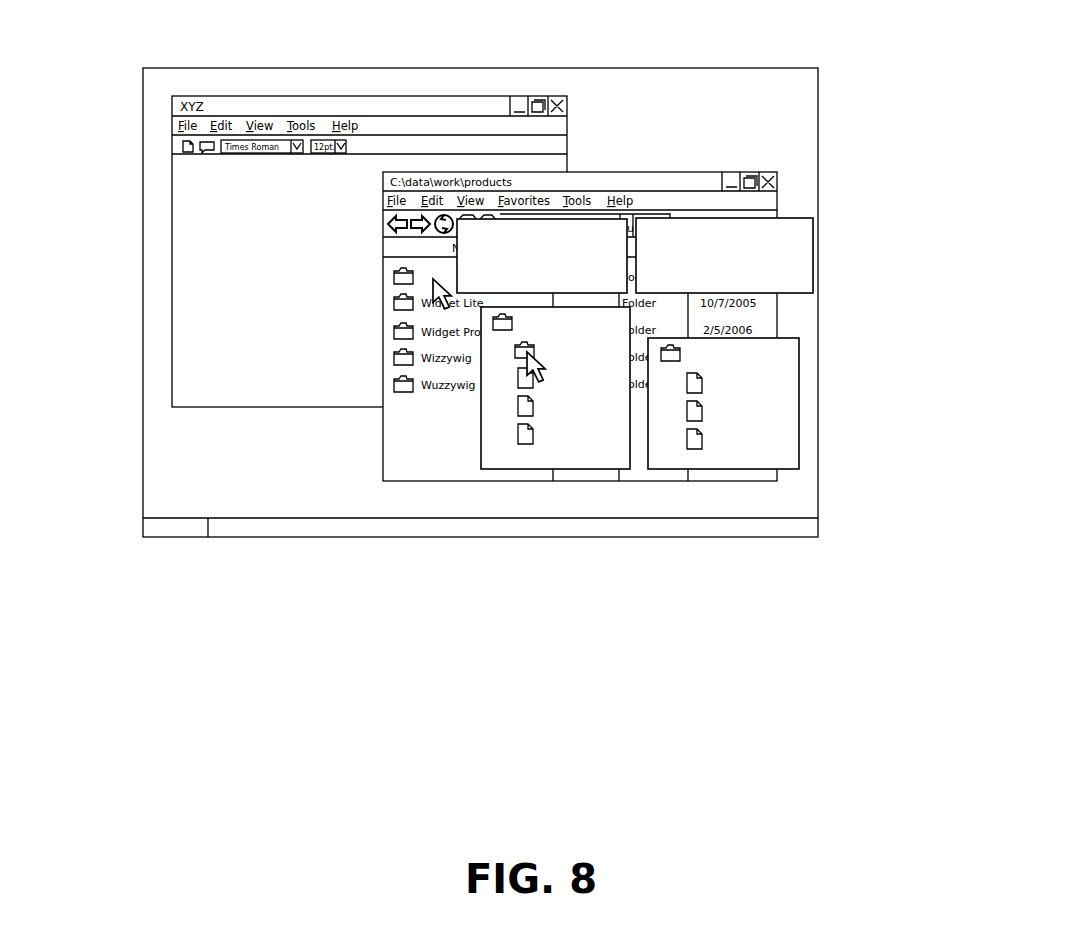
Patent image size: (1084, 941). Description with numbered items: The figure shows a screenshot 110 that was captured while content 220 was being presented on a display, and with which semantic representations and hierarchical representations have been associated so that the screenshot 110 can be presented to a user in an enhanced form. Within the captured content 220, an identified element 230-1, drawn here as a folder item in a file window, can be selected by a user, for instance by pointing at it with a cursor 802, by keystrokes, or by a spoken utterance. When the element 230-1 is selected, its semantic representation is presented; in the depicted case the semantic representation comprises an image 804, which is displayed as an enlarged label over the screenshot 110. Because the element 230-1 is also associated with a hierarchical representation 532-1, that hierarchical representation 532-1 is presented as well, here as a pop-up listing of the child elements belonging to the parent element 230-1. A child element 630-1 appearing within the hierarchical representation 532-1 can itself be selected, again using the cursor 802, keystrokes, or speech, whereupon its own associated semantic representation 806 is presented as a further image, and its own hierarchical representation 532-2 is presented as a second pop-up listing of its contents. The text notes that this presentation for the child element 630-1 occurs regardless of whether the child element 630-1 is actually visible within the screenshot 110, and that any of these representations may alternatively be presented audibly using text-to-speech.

The screenshot 110 is at (143, 85).
The content 220 is at (763, 125).
The parent element 230-1 is at (393, 277).
The cursor 802 is at (527, 357).
The image 804 is at (610, 220).
The semantic representation 806 is at (815, 257).
The hierarchical representation 532-1 is at (472, 454).
The hierarchical representation 532-2 is at (800, 380).
The child element 630-1 is at (565, 362).